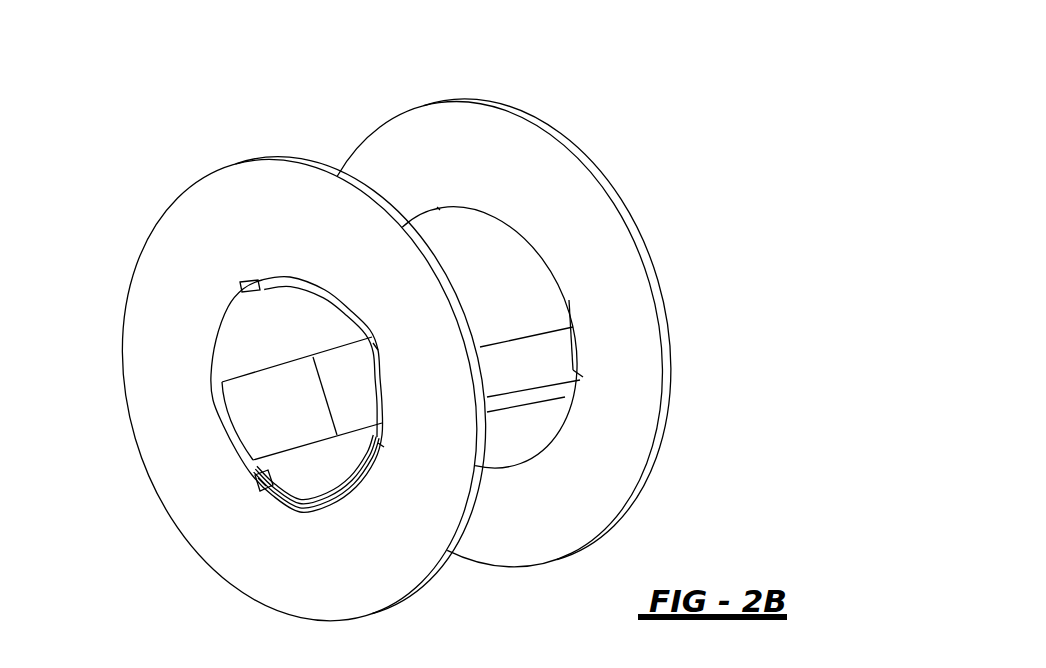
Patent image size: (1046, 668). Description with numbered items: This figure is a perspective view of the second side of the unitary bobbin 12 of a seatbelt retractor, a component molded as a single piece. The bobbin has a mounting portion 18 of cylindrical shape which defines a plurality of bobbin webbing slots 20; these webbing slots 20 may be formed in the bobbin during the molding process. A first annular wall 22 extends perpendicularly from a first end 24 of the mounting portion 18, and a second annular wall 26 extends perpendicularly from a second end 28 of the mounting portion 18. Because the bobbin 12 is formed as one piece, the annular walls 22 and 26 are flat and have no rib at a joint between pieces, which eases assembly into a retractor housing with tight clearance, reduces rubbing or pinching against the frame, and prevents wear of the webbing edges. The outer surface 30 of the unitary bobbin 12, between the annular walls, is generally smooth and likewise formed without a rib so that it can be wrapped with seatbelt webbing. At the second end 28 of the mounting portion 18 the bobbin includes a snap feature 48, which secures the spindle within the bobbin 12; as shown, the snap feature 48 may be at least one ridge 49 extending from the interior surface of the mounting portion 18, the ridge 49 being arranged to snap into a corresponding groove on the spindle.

The unitary bobbin 12 is at (650, 114).
The mounting portion 18 is at (530, 307).
The bobbin webbing slots 20 is at (253, 413).
The first annular wall 22 is at (550, 183).
The first end 24 is at (557, 263).
The second annular wall 26 is at (150, 283).
The second end 28 is at (233, 296).
The outer surface 30 is at (465, 245).
The snap feature 48 is at (255, 280).
The ridge 49 is at (260, 485).